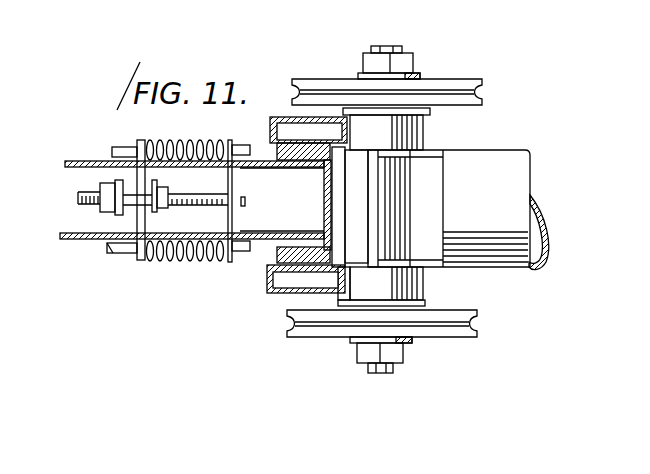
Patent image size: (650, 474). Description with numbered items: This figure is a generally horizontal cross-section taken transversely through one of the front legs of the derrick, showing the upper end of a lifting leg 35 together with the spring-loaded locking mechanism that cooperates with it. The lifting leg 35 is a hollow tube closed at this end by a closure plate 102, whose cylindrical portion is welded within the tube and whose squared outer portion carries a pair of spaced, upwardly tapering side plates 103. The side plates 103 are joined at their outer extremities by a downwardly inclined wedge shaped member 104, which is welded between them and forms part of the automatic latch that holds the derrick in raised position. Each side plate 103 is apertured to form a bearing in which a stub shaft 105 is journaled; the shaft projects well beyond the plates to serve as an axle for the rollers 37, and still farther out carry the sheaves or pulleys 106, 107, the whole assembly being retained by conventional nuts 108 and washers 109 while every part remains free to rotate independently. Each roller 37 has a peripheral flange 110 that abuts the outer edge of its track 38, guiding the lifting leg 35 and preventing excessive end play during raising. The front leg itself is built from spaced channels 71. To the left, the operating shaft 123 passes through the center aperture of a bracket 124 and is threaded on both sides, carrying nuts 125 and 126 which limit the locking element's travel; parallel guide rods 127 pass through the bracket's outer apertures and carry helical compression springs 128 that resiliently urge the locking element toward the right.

The lifting leg 35 is at (517, 174).
The roller 37 is at (414, 138).
The track 38 is at (340, 280).
The channel 71 is at (268, 282).
The closure plate 102 is at (437, 198).
The side plate 103 is at (442, 160).
The wedge shaped member 104 is at (357, 187).
The stub shaft 105 is at (378, 373).
The sheave 106 is at (447, 95).
The sheave 107 is at (462, 338).
The nut 108 is at (373, 62).
The washer 109 is at (416, 76).
The flange 110 is at (436, 117).
The operating shaft 123 is at (80, 198).
The bracket 124 is at (140, 218).
The nut 125 is at (106, 189).
The nut 126 is at (160, 208).
The guide rod 127 is at (122, 152).
The compression spring 128 is at (207, 122).